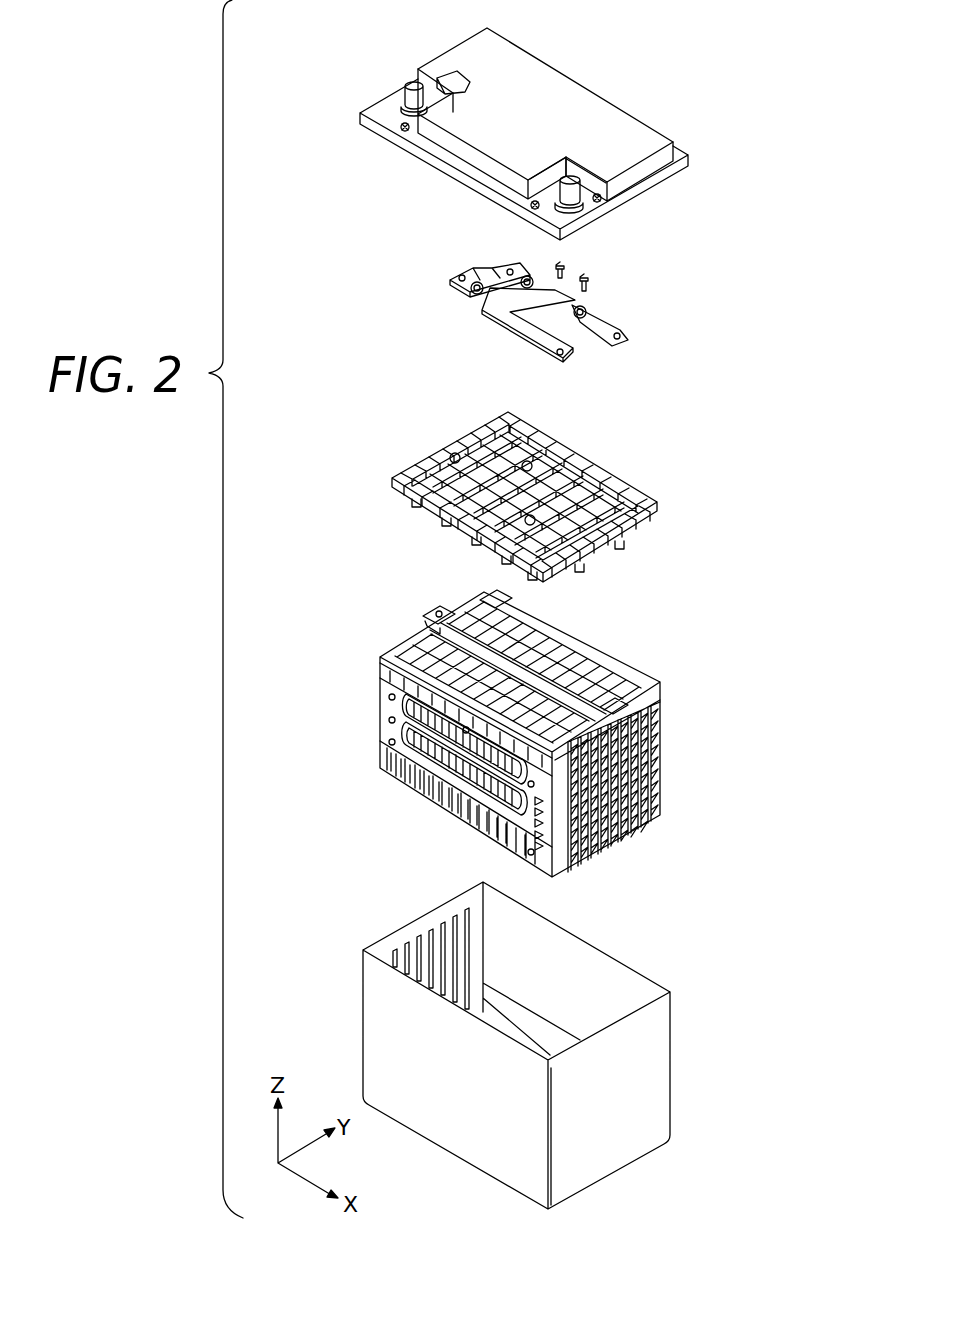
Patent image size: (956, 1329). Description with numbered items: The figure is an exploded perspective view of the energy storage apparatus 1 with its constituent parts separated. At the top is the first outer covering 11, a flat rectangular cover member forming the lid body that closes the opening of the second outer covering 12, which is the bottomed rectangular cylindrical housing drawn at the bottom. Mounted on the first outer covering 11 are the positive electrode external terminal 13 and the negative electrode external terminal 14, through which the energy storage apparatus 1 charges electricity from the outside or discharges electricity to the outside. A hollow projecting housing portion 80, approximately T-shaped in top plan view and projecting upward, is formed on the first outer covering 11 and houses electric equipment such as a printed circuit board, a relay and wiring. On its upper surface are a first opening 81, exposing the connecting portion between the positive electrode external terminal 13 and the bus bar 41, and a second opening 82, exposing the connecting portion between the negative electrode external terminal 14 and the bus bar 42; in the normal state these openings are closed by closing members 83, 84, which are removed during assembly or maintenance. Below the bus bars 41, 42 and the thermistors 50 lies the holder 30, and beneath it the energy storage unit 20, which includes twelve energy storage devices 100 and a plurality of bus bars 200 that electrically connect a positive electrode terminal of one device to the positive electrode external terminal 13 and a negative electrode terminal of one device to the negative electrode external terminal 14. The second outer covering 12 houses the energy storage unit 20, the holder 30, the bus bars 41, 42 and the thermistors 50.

The energy storage apparatus 1 is at (762, 83).
The first outer covering 11 is at (668, 173).
The second outer covering 12 is at (662, 1075).
The positive electrode external terminal 13 is at (572, 178).
The negative electrode external terminal 14 is at (412, 84).
The energy storage unit 20 is at (538, 733).
The holder 30 is at (633, 480).
The bus bar 41 is at (500, 313).
The bus bar 42 is at (450, 287).
The thermistor 50 is at (560, 272).
The projecting housing portion 80 is at (542, 87).
The first opening 81 is at (630, 133).
The second opening 82 is at (518, 51).
The closing member 83 is at (597, 162).
The closing member 84 is at (457, 78).
The energy storage device 100 is at (396, 785).
The bus bar 200 is at (625, 663).